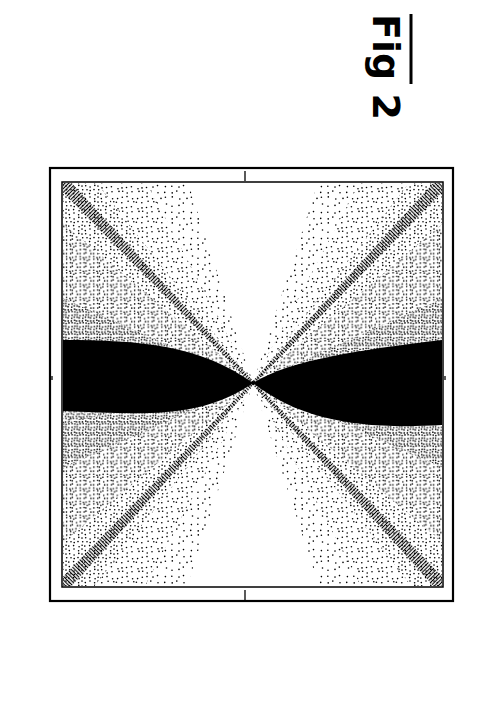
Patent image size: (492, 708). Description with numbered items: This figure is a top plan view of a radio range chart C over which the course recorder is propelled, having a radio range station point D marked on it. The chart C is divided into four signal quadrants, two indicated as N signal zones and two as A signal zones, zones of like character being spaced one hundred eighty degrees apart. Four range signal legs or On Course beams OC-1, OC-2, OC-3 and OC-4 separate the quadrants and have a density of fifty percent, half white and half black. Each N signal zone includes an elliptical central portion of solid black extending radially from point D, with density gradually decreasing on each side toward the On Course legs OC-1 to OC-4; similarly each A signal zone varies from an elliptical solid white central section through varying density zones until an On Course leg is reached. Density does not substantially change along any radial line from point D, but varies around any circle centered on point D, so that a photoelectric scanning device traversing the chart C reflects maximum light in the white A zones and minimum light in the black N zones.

The On Course beam OC-1 is at (441, 574).
The On Course beam OC-2 is at (69, 575).
The On Course beam OC-3 is at (62, 186).
The On Course beam OC-4 is at (441, 188).
The chart C is at (348, 603).
The radio range station point D is at (254, 395).
The A signal zone A is at (250, 385).
The N signal zone N is at (251, 379).